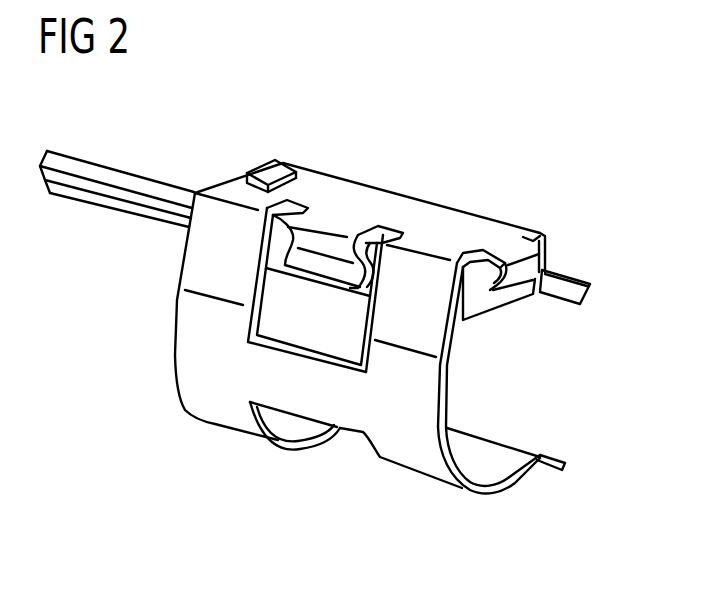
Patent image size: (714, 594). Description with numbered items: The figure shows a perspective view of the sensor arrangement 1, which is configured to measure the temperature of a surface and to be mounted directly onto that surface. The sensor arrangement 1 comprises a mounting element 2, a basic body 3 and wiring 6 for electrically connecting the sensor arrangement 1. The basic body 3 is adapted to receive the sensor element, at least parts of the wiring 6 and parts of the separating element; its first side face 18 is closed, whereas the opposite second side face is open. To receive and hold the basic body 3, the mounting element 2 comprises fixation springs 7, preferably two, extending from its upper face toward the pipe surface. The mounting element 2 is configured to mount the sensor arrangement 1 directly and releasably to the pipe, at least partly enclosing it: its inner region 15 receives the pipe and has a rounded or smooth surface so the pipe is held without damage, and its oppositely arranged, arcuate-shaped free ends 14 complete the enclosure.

The sensor arrangement 1 is at (486, 138).
The mounting element 2 is at (533, 448).
The basic body 3 is at (508, 299).
The wiring 6 is at (102, 170).
The fixation spring 7 is at (322, 242).
The free end 14 is at (575, 284).
The inner region 15 is at (531, 393).
The first side face 18 is at (407, 467).